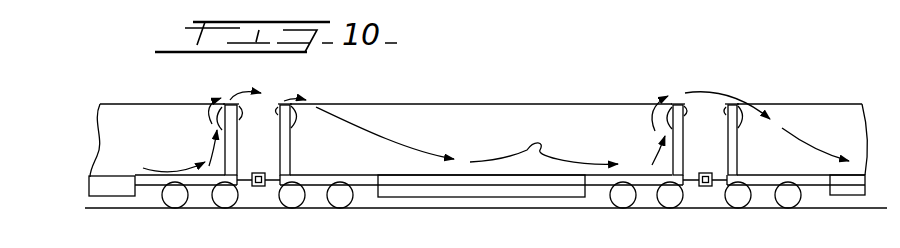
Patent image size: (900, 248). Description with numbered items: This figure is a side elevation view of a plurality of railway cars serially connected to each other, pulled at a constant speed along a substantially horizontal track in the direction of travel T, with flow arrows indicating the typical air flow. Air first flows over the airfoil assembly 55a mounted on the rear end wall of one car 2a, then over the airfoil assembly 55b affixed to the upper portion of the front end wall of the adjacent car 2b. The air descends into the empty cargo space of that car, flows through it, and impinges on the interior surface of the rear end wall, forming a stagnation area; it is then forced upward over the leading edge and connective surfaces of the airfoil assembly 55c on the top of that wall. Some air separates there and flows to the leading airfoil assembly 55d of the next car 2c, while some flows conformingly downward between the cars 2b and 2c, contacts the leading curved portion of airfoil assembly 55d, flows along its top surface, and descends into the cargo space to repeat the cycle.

The car 2a is at (119, 100).
The adjacent car 2b is at (460, 103).
The next car 2c is at (792, 100).
The airfoil assembly 55a is at (238, 73).
The airfoil assembly 55b is at (283, 101).
The airfoil assembly 55c is at (677, 103).
The airfoil assembly 55d is at (752, 73).
The direction of travel T is at (532, 83).